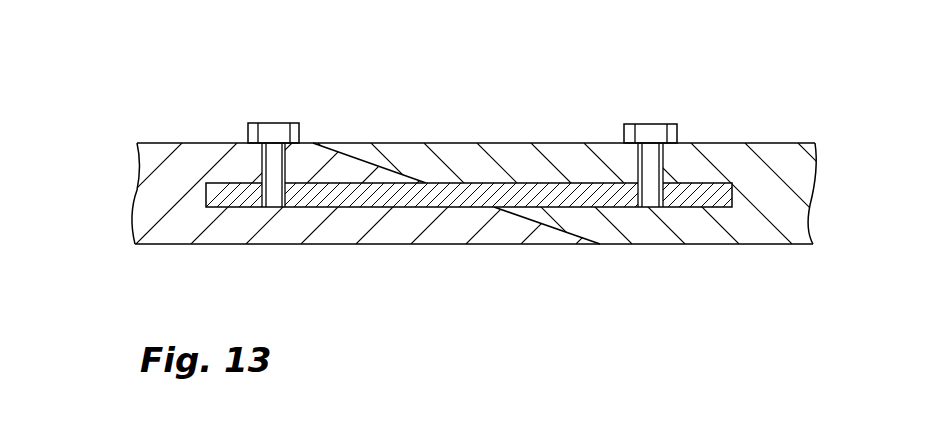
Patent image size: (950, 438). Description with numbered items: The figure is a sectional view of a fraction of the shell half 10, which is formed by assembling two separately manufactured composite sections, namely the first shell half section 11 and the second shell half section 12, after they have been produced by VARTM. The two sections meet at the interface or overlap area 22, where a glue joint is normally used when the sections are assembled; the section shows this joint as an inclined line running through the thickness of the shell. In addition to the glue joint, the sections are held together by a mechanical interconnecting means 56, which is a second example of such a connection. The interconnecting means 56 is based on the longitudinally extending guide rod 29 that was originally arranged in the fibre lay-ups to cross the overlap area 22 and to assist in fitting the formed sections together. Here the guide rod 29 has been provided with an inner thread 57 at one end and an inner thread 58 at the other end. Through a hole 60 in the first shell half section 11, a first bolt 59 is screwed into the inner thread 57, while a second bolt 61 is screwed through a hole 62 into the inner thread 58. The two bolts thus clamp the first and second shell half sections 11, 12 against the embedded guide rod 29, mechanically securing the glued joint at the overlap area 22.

The shell half 10 is at (828, 222).
The first shell half section 11 is at (219, 232).
The second shell half section 12 is at (730, 220).
The overlap area 22 is at (500, 223).
The guide rod 29 is at (455, 182).
The interconnecting means 56 is at (688, 105).
The inner thread 57 is at (277, 198).
The inner thread 58 is at (653, 198).
The first bolt 59 is at (278, 132).
The hole 60 is at (267, 156).
The second bolt 61 is at (655, 132).
The hole 62 is at (658, 159).